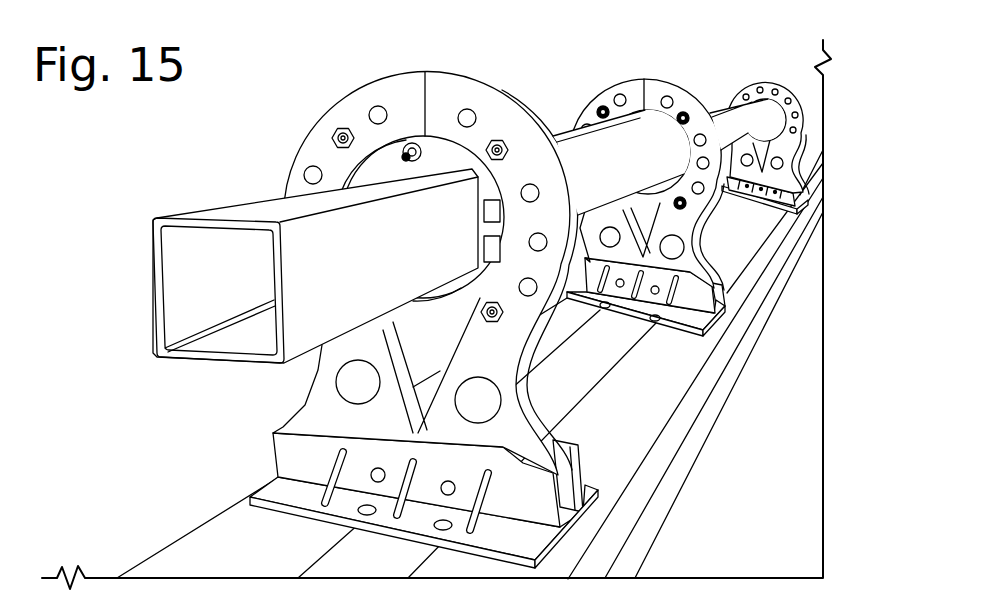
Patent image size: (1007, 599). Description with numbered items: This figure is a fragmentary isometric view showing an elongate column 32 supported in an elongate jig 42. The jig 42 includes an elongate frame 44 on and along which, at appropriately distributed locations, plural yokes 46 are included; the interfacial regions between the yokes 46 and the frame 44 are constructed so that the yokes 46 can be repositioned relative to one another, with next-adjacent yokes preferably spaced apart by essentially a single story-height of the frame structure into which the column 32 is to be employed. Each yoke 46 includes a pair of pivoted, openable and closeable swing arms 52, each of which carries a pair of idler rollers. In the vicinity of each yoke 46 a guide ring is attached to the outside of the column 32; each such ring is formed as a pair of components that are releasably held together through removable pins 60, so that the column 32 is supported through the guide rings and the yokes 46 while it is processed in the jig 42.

The column 32 is at (235, 195).
The jig 42 is at (521, 291).
The elongate frame 44 is at (238, 543).
The yoke 46 is at (503, 98).
The swing arm 52 is at (460, 98).
The removable pin 60 is at (411, 146).